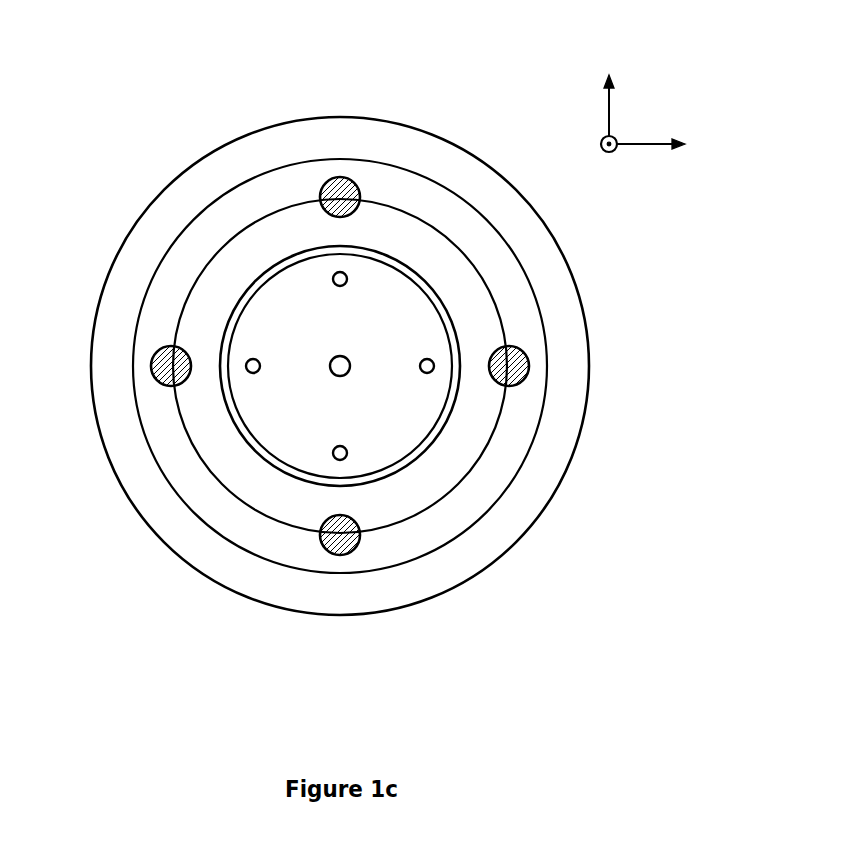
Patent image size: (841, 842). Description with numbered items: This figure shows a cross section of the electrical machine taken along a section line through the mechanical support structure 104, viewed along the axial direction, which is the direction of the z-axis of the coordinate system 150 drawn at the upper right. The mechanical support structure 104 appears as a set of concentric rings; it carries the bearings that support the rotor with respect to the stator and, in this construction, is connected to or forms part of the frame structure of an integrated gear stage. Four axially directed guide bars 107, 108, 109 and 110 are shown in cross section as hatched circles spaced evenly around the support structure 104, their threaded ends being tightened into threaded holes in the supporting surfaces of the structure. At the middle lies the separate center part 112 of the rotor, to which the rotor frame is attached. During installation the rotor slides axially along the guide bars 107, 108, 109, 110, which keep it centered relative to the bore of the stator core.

The mechanical support structure 104 is at (430, 255).
The guide bar 107 is at (338, 177).
The guide bar 108 is at (529, 364).
The guide bar 109 is at (340, 555).
The guide bar 110 is at (151, 369).
The center part 112 is at (296, 329).
The coordinate system 150 is at (671, 96).